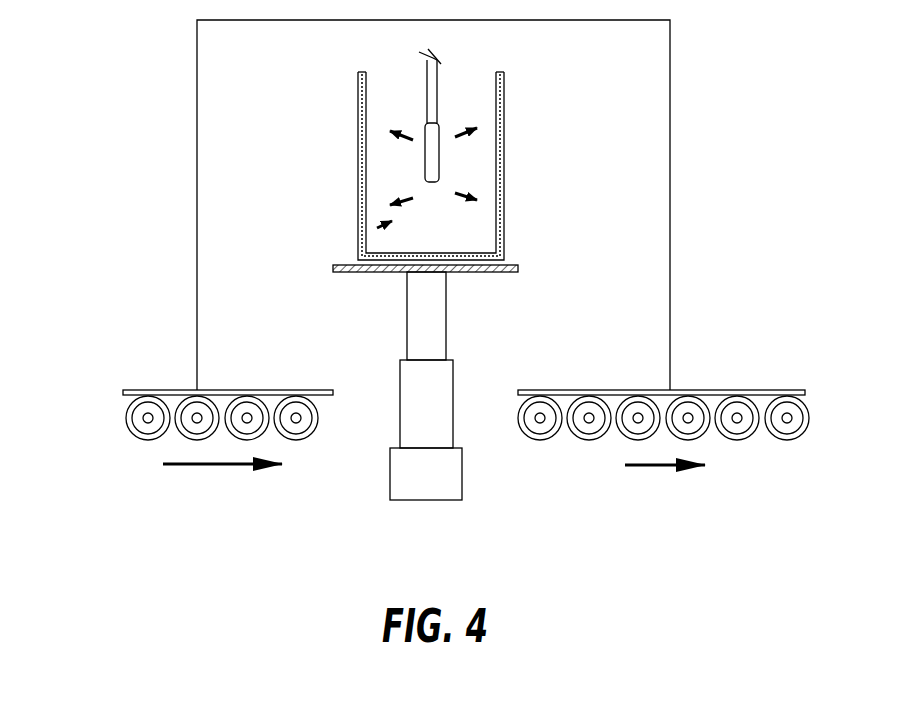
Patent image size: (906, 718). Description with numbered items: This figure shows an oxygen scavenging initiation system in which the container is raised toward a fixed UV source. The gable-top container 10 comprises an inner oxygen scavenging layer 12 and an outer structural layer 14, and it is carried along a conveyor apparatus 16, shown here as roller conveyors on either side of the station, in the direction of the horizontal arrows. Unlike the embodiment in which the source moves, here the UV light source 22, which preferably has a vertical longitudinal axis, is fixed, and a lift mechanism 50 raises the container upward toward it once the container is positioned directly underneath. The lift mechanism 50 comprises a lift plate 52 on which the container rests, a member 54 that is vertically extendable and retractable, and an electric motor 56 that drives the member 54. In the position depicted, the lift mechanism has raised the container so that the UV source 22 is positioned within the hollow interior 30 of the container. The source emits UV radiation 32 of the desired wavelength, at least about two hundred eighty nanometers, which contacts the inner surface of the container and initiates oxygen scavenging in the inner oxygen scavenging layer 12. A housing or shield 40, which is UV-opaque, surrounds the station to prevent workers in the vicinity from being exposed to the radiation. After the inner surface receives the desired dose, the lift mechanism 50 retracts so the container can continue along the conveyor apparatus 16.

The gable-top container 10 is at (485, 143).
The inner oxygen scavenging layer 12 is at (433, 146).
The outer structural layer 14 is at (470, 162).
The conveyor apparatus 16 is at (185, 452).
The UV light source 22 is at (453, 150).
The hollow interior 30 is at (347, 241).
The UV radiation 32 is at (400, 203).
The housing or shield 40 is at (469, 205).
The lift mechanism 50 is at (452, 402).
The lift plate 52 is at (434, 286).
The member 54 is at (391, 404).
The electric motor 56 is at (440, 494).